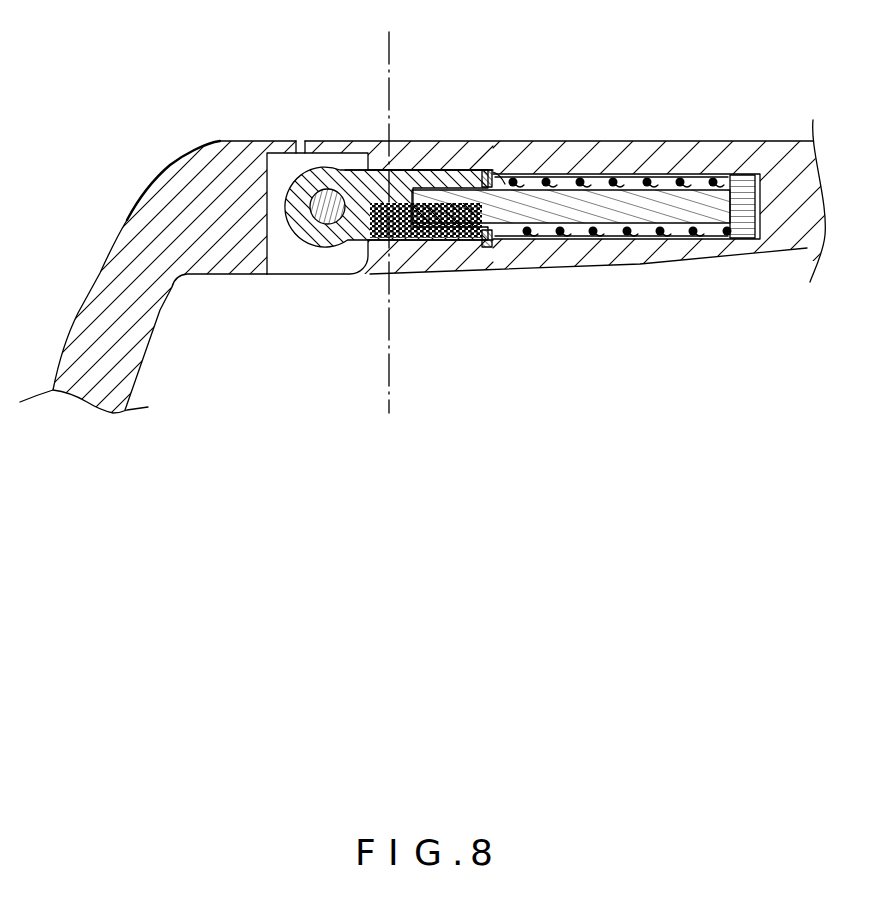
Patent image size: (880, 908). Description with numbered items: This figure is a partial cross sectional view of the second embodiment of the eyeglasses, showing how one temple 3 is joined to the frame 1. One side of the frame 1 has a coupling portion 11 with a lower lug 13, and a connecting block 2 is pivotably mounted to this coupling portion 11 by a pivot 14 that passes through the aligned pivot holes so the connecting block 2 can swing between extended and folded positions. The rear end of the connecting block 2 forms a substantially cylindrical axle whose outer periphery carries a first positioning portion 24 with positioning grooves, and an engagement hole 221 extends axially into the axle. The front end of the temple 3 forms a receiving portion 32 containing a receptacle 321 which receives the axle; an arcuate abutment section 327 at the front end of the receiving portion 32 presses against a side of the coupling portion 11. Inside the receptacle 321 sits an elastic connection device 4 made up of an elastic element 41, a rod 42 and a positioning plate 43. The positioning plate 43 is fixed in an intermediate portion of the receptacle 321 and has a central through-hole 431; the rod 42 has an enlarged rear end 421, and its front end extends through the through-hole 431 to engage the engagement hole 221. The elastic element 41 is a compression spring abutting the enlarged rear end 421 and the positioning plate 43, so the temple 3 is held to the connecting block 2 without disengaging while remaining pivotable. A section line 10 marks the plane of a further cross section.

The frame 1 is at (75, 262).
The coupling portion 11 is at (147, 178).
The lower lug 13 is at (283, 178).
The abutment section 327 is at (299, 145).
The temple 3 is at (686, 132).
The receiving portion 32 is at (383, 140).
The receptacle 321 is at (482, 172).
The connecting block 2 is at (427, 168).
The engagement hole 221 is at (445, 172).
The pivot 14 is at (325, 215).
The elastic connection device 4 is at (589, 138).
The elastic element 41 is at (580, 186).
The enlarged rear end 421 is at (742, 203).
The positioning plate 43 is at (488, 169).
The through-hole 431 is at (512, 172).
The rod 42 is at (637, 208).
The first positioning portion 24 is at (405, 240).
The section line 10- 10 is at (389, 41).